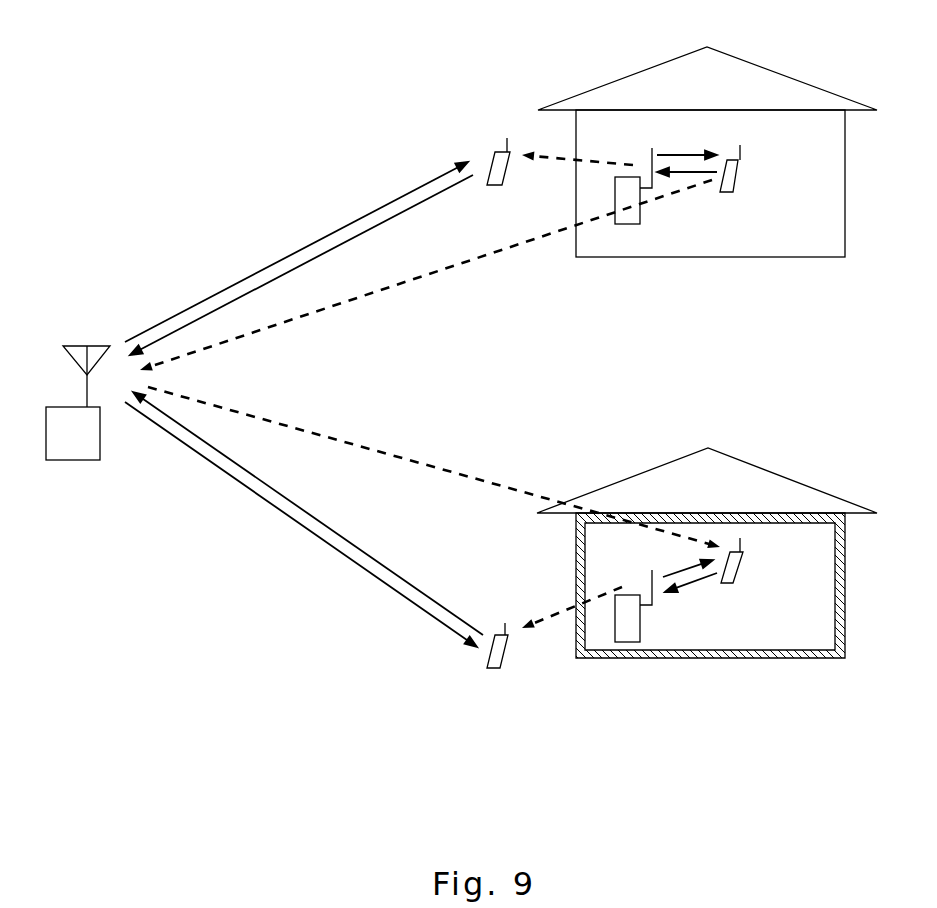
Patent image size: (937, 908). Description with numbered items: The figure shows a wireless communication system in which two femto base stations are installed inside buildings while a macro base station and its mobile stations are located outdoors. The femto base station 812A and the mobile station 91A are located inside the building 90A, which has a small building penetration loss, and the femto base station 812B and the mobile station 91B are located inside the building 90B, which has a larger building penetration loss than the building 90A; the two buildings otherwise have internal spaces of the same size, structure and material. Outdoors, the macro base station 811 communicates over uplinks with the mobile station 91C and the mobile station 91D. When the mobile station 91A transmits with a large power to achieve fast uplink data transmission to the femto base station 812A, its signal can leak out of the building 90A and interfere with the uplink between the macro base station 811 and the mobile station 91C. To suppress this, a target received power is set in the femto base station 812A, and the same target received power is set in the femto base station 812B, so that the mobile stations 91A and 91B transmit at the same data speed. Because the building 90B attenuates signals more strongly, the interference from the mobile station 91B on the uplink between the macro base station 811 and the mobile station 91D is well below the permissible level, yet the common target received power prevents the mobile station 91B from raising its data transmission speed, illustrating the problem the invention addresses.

The macro base station 811 is at (73, 460).
The building 90A is at (767, 70).
The building 90B is at (770, 472).
The mobile station 91A is at (740, 168).
The mobile station 91B is at (742, 566).
The mobile station 91C is at (495, 150).
The mobile station 91D is at (492, 670).
The femto base station 812A is at (640, 218).
The femto base station 812B is at (640, 628).